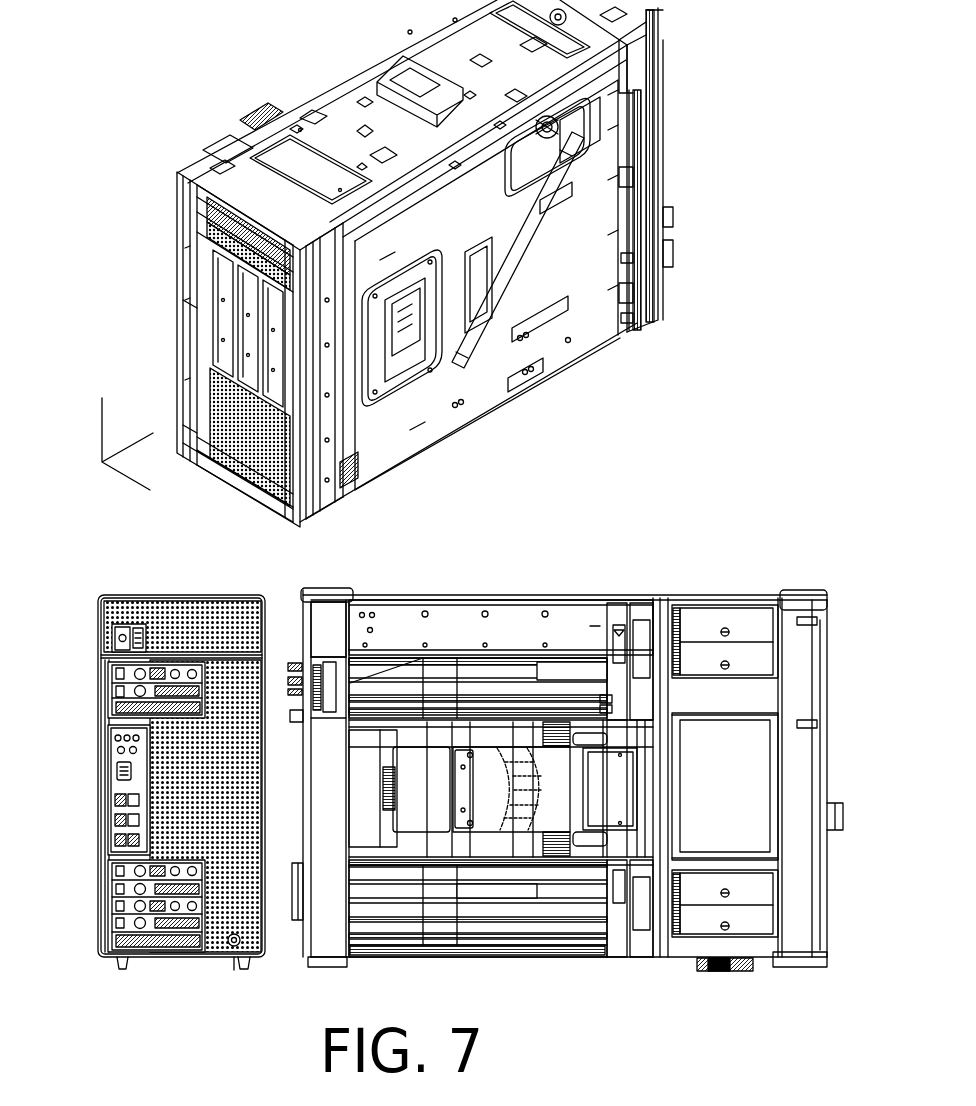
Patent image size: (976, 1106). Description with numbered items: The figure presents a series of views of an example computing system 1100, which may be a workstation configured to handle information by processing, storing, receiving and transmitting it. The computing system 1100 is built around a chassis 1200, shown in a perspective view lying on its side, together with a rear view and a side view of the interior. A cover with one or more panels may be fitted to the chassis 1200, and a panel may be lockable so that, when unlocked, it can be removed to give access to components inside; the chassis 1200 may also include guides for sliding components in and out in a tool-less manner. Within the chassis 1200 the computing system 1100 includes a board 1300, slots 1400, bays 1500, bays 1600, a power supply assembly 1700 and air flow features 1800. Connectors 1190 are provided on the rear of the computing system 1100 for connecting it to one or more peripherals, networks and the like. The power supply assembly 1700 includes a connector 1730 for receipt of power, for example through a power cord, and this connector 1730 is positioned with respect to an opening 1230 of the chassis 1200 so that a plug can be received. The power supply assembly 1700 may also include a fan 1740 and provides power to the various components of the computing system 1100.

The computing system 1100 is at (276, 58).
The chassis 1200 is at (539, 402).
The bays 1600 is at (201, 313).
The connector 1730 is at (118, 627).
The fan 1740 is at (183, 617).
The opening 1230 is at (110, 633).
The slots 1400 is at (108, 696).
The connectors 1190 is at (106, 783).
The power supply assembly 1700 is at (377, 617).
The air flow features 1800 is at (482, 727).
The bays 1500 is at (728, 597).
The board 1300 is at (500, 790).